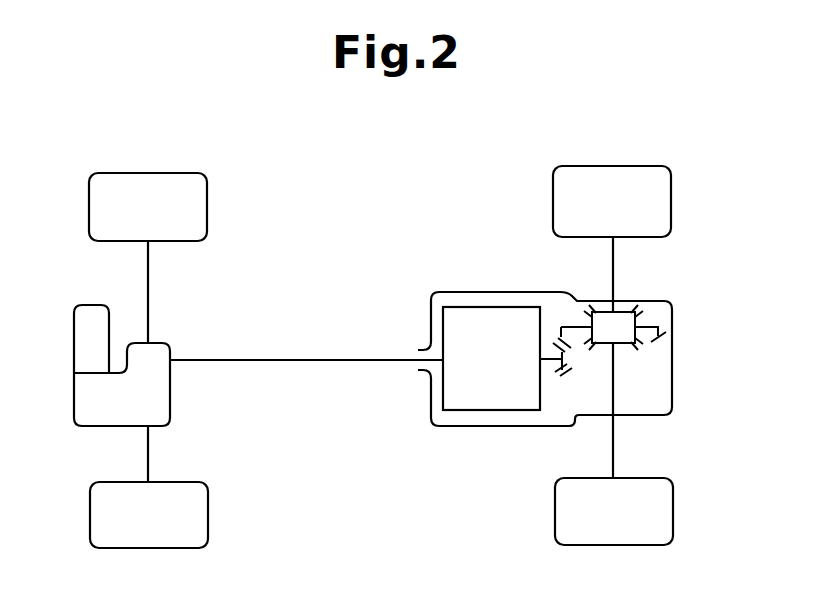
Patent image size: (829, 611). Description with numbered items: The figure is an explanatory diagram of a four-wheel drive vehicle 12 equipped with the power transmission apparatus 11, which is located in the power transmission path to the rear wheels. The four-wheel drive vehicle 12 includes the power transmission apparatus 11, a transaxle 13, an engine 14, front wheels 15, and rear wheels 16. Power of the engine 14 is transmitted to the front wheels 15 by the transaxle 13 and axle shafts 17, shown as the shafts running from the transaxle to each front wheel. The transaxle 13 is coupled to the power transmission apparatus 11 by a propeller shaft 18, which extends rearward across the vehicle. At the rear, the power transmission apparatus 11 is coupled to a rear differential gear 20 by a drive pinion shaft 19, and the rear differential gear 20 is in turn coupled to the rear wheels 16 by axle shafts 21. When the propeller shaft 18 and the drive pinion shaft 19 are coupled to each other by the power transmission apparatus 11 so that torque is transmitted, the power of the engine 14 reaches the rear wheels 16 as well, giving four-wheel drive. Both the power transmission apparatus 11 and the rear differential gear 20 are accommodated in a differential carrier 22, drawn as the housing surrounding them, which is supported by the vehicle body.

The power transmission apparatus 11 is at (503, 307).
The four-wheel drive vehicle 12 is at (394, 150).
The transaxle 13 is at (74, 398).
The engine 14 is at (74, 345).
The front wheels 15 is at (199, 209).
The rear wheels 16 is at (667, 198).
The axle shafts 17 is at (148, 292).
The propeller shaft 18 is at (310, 360).
The drive pinion shaft 19 is at (548, 360).
The rear differential gear 20 is at (654, 354).
The axle shafts 21 is at (613, 268).
The differential carrier 22 is at (445, 292).